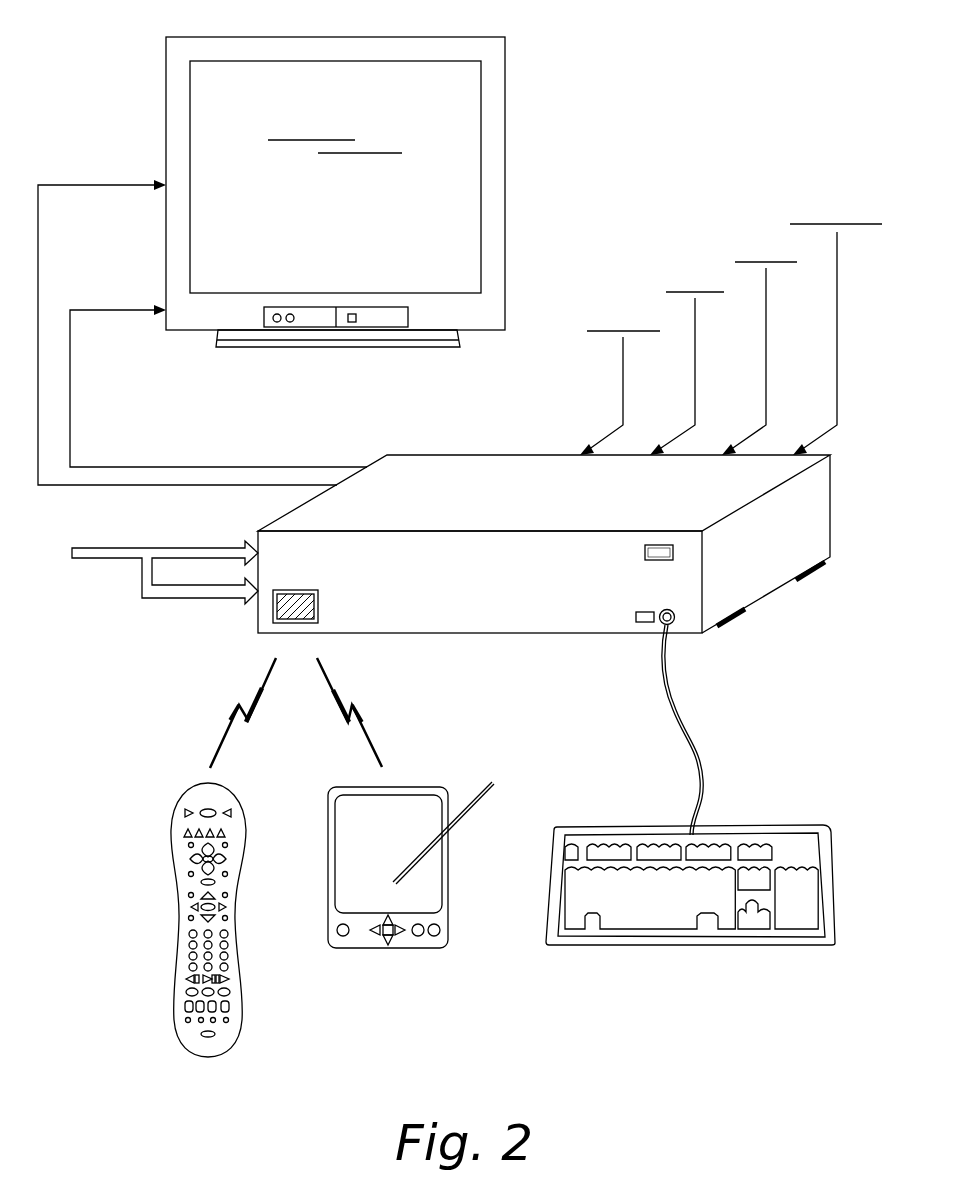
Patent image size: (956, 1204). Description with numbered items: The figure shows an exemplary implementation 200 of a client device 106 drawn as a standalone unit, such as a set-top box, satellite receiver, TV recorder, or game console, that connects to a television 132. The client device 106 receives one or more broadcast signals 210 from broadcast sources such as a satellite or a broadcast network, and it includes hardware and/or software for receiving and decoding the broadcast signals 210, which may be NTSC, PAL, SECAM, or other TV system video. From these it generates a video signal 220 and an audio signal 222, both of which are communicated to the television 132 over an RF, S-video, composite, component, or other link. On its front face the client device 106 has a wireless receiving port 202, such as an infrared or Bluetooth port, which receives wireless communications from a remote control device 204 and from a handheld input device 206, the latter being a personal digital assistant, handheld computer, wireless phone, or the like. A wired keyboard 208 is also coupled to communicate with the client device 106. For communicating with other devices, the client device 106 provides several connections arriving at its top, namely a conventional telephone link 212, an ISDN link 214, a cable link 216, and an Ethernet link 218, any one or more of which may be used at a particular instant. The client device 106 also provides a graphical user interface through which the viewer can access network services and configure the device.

The exemplary implementation 200 is at (591, 58).
The television 132 is at (455, 282).
The video signal 220 is at (128, 220).
The audio signal 222 is at (128, 348).
The telephone link 212 is at (623, 290).
The ISDN link 214 is at (696, 253).
The cable link 216 is at (767, 220).
The Ethernet link 218 is at (837, 183).
The client device 106 is at (450, 453).
The wireless receiving port 202 is at (310, 590).
The broadcast signals 210 is at (127, 559).
The remote control device 204 is at (173, 813).
The handheld input device 206 is at (405, 787).
The wired keyboard 208 is at (738, 828).